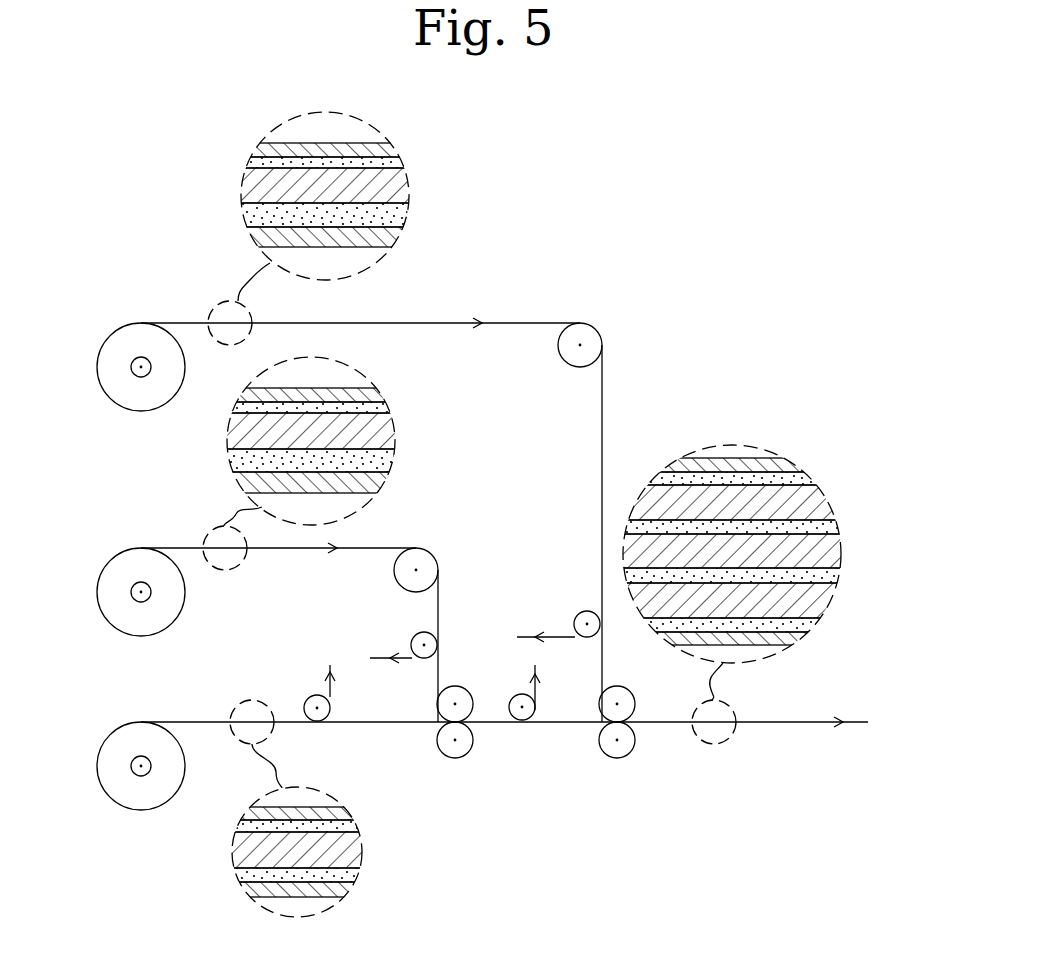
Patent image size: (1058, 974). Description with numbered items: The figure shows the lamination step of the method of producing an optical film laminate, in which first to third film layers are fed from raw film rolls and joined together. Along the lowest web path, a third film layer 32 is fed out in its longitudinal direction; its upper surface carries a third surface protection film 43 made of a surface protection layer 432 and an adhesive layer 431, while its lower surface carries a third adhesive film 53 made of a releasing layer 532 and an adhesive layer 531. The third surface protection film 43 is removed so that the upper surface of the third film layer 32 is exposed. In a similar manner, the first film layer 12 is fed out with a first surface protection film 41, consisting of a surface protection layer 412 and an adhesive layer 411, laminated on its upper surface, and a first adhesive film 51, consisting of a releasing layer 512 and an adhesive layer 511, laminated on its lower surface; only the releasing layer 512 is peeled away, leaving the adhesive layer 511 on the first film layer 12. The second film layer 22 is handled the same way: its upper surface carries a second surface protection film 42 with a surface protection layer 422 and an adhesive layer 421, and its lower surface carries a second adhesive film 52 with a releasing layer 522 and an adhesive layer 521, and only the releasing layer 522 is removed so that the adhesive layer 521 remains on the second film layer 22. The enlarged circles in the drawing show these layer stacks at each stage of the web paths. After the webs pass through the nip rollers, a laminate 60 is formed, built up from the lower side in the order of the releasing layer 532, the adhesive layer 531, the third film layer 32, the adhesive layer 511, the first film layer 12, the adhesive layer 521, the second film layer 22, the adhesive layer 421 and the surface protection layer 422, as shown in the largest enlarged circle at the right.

The first film layer 12 is at (390, 441).
The second film layer 22 is at (396, 195).
The third film layer 32 is at (356, 850).
The first surface protection film 41 is at (382, 543).
The adhesive layer 411 is at (378, 408).
The surface protection layer 412 is at (372, 396).
The second surface protection film 42 is at (561, 307).
The adhesive layer 421 is at (385, 162).
The surface protection layer 422 is at (383, 149).
The third surface protection film 43 is at (342, 743).
The adhesive layer 431 is at (346, 827).
The surface protection layer 432 is at (343, 813).
The first adhesive film 51 is at (554, 556).
The adhesive layer 511 is at (374, 462).
The releasing layer 512 is at (374, 484).
The second adhesive film 52 is at (561, 437).
The adhesive layer 521 is at (392, 218).
The releasing layer 522 is at (388, 237).
The third adhesive film 53 is at (556, 771).
The adhesive layer 531 is at (346, 875).
The releasing layer 532 is at (344, 891).
The laminate 60 is at (886, 444).